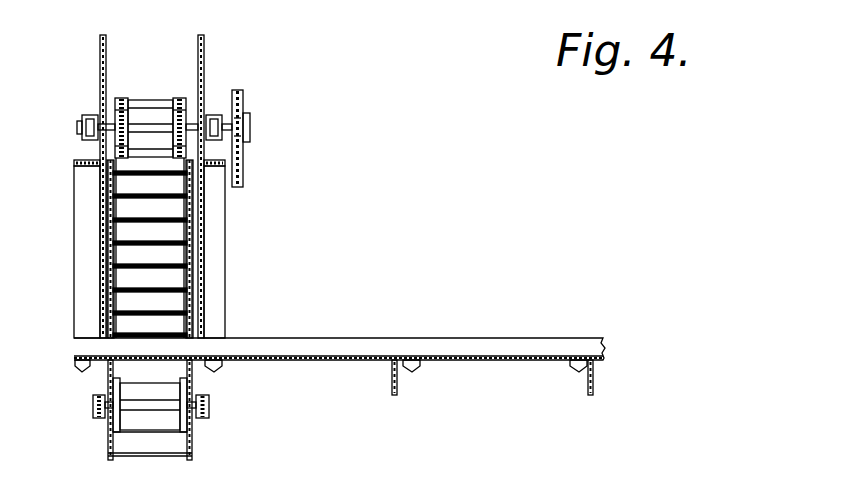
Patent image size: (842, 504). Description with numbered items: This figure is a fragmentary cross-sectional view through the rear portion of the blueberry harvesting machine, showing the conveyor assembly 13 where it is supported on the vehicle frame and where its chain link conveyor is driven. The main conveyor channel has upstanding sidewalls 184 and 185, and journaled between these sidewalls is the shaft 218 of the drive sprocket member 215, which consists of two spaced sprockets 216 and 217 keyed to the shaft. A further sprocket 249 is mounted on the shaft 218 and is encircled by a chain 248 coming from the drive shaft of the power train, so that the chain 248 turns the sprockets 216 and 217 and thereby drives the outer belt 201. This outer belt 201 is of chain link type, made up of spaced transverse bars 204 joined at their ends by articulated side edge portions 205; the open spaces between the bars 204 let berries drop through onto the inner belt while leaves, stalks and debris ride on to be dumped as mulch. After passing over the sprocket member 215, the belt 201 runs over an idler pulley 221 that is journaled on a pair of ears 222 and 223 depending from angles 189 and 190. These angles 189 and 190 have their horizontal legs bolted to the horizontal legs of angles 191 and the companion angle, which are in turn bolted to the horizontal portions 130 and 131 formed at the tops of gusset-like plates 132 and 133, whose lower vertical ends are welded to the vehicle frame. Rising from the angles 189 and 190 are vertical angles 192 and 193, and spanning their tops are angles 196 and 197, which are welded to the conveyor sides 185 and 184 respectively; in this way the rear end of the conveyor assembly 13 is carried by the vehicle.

The conveyor assembly 13 is at (152, 55).
The sidewall 185 is at (99, 40).
The sidewall 184 is at (205, 42).
The sprocket 216 is at (122, 97).
The sprocket 217 is at (180, 97).
The sprocket member 215 is at (147, 118).
The shaft 218 is at (83, 128).
The sprocket 249 is at (251, 127).
The chain 248 is at (243, 172).
The angle 196 is at (74, 164).
The angle 197 is at (214, 168).
The vertical angle 192 is at (74, 265).
The vertical angle 193 is at (223, 255).
The articulated side edge portions 205 is at (108, 297).
The angle 191 is at (350, 337).
The angle 189 is at (75, 366).
The angle 190 is at (222, 368).
The idler pulley 221 is at (110, 425).
The ear 222 is at (93, 408).
The ear 223 is at (210, 410).
The outer belt 201 is at (165, 449).
The transverse bars 204 is at (146, 434).
The gussetlike plate 132 is at (391, 382).
The horizontal portion 130 is at (416, 368).
The horizontal portion 131 is at (571, 366).
The gussetlike plate 133 is at (596, 386).